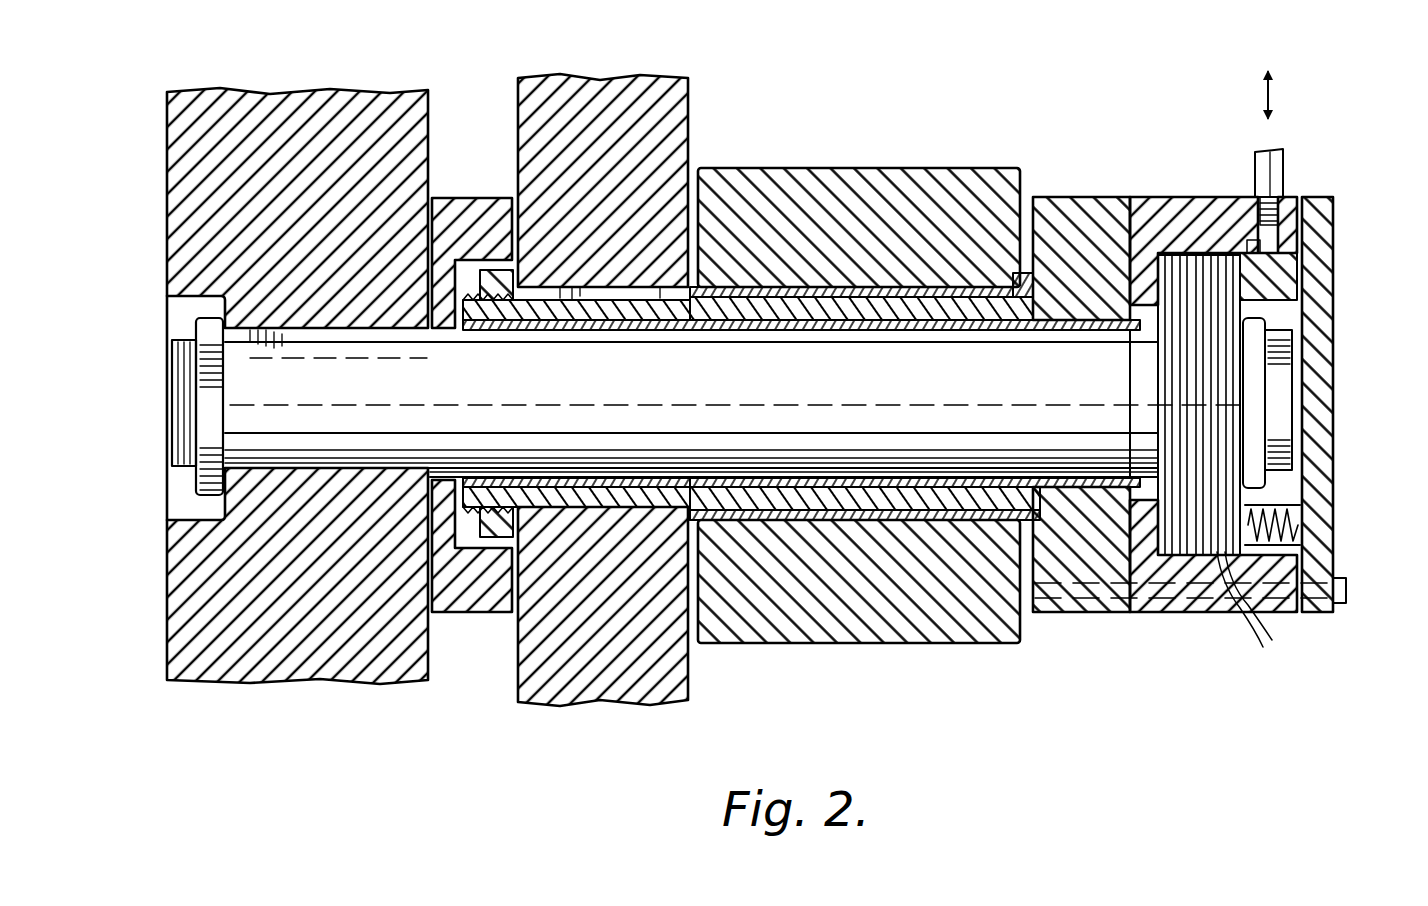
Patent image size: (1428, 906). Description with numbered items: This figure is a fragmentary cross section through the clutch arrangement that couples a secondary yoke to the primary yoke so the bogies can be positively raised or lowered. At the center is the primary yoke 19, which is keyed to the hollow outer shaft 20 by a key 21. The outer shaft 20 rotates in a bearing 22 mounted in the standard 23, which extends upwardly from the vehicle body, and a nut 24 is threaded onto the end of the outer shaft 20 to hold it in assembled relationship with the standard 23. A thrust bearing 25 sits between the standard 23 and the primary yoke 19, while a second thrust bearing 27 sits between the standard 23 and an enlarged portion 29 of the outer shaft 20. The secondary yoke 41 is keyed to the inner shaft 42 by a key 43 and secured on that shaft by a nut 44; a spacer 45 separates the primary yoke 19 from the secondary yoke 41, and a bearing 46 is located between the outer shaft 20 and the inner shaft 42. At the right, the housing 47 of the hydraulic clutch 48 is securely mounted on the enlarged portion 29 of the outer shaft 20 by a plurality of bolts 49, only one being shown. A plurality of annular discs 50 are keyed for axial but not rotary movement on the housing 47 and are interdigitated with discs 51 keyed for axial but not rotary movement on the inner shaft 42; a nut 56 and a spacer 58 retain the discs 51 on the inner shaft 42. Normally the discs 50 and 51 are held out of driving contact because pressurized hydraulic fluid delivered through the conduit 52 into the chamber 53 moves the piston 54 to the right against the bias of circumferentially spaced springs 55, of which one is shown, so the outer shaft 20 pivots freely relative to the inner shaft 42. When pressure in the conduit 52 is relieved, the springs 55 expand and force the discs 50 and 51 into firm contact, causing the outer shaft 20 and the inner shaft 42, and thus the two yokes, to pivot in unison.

The primary yoke 19 is at (573, 705).
The hollow shaft 20 is at (937, 310).
The key 21 is at (658, 322).
The bearing 22 is at (870, 297).
The standard 23 is at (957, 645).
The nut 24 is at (505, 490).
The thrust bearing 25 is at (695, 515).
The thrust bearing 27 is at (1047, 318).
The enlarged portion 29 is at (1090, 200).
The secondary yoke 41 is at (272, 680).
The inner shaft 42 is at (833, 457).
The key 43 is at (353, 335).
The nut 44 is at (202, 418).
The spacer 45 is at (473, 205).
The bearing 46 is at (598, 325).
The housing 47 is at (1205, 613).
The hydraulic clutch 48 is at (1176, 622).
The bolt 49 is at (1346, 605).
The annular discs 50 is at (1193, 253).
The discs 51 is at (1259, 608).
The conduit 52 is at (1283, 158).
The chamber 53 is at (1283, 235).
The piston 54 is at (1283, 268).
The springs 55 is at (1300, 530).
The nut 56 is at (1275, 338).
The spacer 58 is at (1243, 363).